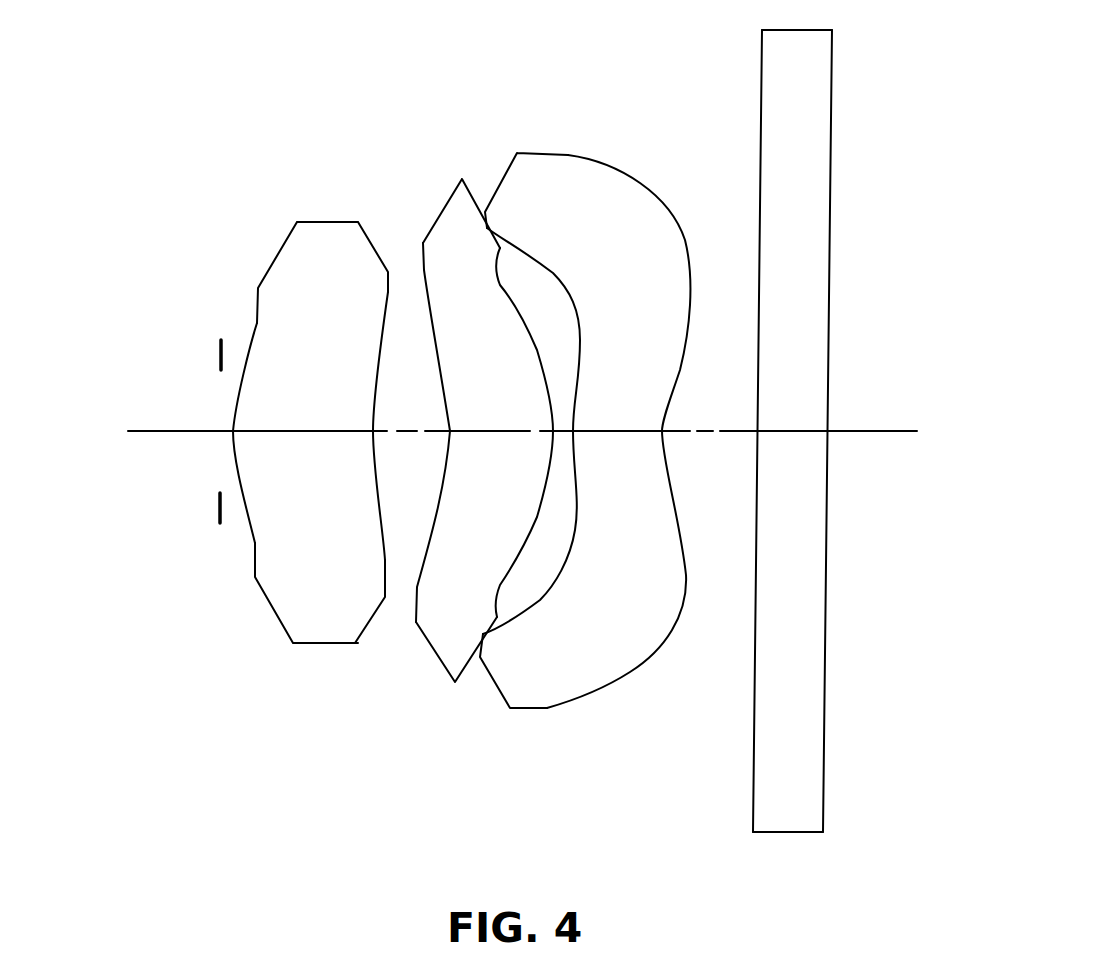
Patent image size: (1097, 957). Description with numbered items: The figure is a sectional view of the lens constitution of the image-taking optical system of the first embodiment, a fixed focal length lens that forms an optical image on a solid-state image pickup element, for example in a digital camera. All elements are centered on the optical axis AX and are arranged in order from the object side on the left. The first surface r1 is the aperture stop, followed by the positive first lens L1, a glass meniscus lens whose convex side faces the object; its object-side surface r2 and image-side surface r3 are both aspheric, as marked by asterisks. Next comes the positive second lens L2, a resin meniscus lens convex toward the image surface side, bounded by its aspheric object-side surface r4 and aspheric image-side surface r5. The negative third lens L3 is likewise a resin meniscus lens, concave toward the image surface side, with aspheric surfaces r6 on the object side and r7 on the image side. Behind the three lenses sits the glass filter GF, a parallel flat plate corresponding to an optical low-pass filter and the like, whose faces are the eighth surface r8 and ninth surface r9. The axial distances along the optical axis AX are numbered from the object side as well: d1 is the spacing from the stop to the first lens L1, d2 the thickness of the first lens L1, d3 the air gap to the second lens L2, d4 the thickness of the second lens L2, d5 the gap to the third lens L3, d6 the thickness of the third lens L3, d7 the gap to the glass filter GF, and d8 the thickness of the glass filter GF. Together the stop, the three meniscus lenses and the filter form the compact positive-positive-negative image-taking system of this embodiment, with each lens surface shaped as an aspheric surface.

The first lens L1 is at (245, 435).
The second lens L2 is at (430, 405).
The third lens L3 is at (572, 421).
The glass filter GF is at (806, 424).
The optical axis AX is at (863, 431).
The first surface (aperture stop) r1 is at (221, 353).
The second surface r2 is at (250, 337).
The third surface r3 is at (382, 312).
The fourth surface r4 is at (422, 263).
The fifth surface r5 is at (500, 290).
The sixth surface r6 is at (510, 243).
The seventh surface r7 is at (568, 155).
The eighth surface r8 is at (762, 70).
The ninth surface r9 is at (832, 67).
The first axial distance d1 is at (235, 431).
The second axial distance d2 is at (303, 406).
The third axial distance d3 is at (411, 406).
The fourth axial distance d4 is at (499, 406).
The fifth axial distance d5 is at (563, 431).
The sixth axial distance d6 is at (618, 406).
The seventh axial distance d7 is at (709, 406).
The eighth axial distance d8 is at (799, 406).